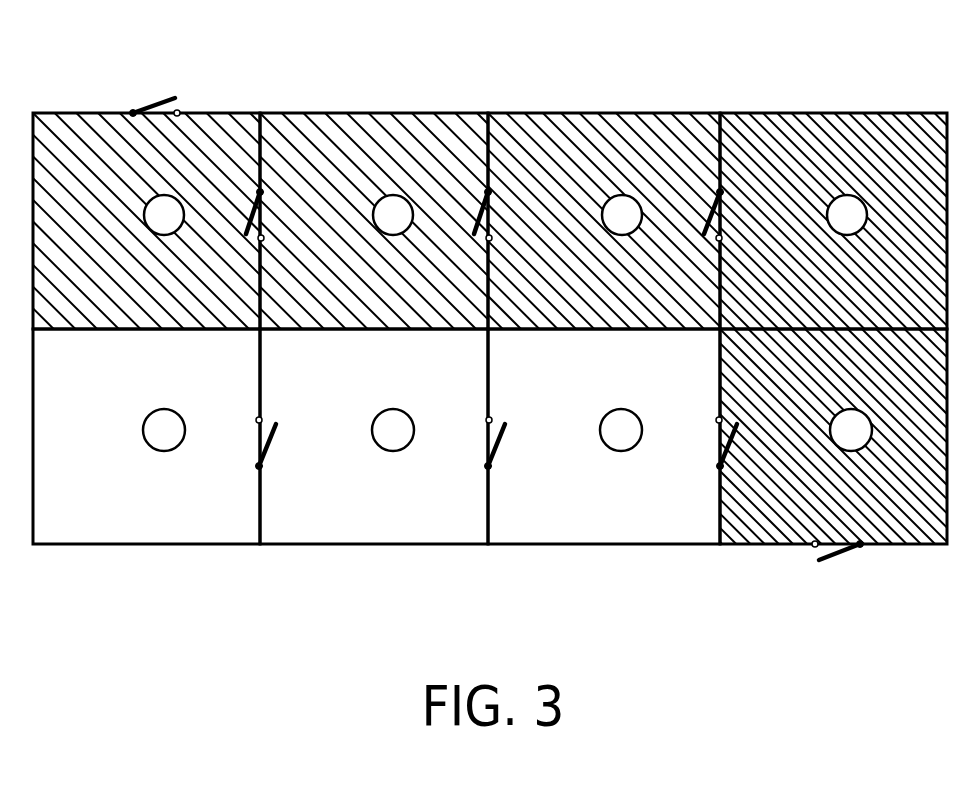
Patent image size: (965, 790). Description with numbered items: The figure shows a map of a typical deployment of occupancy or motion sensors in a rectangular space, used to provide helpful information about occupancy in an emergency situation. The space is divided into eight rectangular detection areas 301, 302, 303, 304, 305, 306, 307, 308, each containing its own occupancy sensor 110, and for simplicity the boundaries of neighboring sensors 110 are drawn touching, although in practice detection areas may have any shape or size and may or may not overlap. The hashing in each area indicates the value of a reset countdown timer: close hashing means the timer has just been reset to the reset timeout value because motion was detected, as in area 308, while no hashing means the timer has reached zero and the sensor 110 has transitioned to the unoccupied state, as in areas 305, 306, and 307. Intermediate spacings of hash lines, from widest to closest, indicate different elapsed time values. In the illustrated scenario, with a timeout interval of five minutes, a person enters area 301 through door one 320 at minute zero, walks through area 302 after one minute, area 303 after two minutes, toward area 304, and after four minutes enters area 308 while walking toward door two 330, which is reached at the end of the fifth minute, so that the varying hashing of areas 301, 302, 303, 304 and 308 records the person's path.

The occupancy sensor 110 is at (164, 236).
The area 301 is at (65, 125).
The area 302 is at (378, 130).
The area 303 is at (600, 122).
The area 304 is at (827, 122).
The area 305 is at (151, 530).
The area 306 is at (380, 530).
The area 307 is at (612, 530).
The area 308 is at (905, 544).
The door 1 320 is at (156, 99).
The door 2 330 is at (841, 557).